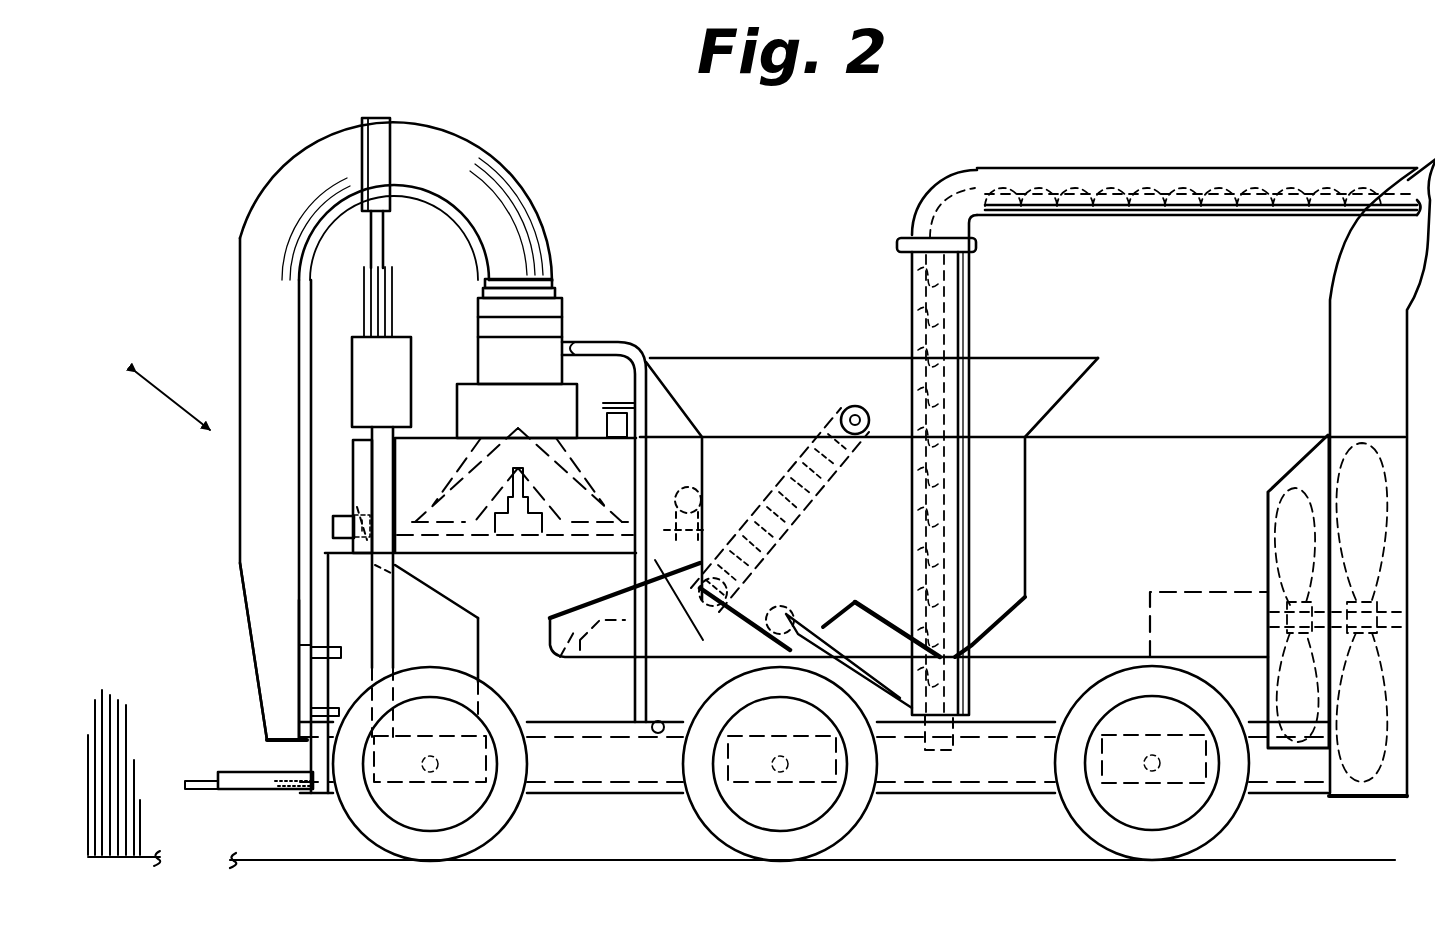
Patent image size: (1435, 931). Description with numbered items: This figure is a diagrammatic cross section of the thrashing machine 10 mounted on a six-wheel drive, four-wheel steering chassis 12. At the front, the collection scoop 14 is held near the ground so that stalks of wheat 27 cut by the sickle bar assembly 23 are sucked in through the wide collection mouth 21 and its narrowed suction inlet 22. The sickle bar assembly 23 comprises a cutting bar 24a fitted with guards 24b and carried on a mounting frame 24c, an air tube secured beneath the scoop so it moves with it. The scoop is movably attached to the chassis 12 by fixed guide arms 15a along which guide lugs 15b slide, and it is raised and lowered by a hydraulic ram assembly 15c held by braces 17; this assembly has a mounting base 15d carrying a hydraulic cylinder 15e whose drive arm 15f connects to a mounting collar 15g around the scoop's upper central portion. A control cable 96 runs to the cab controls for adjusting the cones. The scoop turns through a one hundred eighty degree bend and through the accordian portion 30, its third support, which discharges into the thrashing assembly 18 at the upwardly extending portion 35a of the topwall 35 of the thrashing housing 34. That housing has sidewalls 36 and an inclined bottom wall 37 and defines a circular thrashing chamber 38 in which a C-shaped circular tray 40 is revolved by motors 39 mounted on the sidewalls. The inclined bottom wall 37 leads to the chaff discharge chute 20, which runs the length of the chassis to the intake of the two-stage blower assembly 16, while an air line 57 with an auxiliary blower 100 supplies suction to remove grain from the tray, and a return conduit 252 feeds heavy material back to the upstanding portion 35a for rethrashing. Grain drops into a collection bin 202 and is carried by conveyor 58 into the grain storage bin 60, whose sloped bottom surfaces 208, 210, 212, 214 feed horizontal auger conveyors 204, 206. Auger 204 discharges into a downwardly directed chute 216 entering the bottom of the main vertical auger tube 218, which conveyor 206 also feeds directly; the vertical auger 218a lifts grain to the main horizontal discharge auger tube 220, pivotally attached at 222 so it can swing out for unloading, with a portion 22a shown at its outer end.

The thrashing machine 10 is at (714, 260).
The chassis 12 is at (812, 767).
The collection scoop 14 is at (215, 522).
The guide arms 15a is at (327, 647).
The guide lugs 15b is at (312, 643).
The hydraulic ram assembly 15c is at (338, 373).
The mounting base 15d is at (381, 382).
The hydraulic cylinder 15e is at (392, 297).
The drive arm 15f is at (383, 236).
The mounting collar 15g is at (378, 162).
The two-stage blower assembly 16 is at (1245, 497).
The braces 17 is at (398, 487).
The thrashing assembly 18 is at (466, 353).
The chaff discharge chute 20 is at (477, 639).
The collection mouth 21 is at (250, 736).
The suction inlet 22 is at (281, 745).
The duct end cap 22a is at (1273, 216).
The sickle bar assembly 23 is at (282, 792).
The cutting bar 24a is at (253, 781).
The guards 24b is at (208, 791).
The mounting frame 24c is at (308, 721).
The stalks of wheat 27 is at (102, 706).
The accordian portion 30 is at (556, 302).
The thrashing housing 34 is at (668, 428).
The topwall 35 is at (477, 365).
The upwardly extending portion 35a is at (597, 382).
The sidewalls 36 is at (356, 458).
The inclined bottom wall 37 is at (450, 605).
The thrashing chamber 38 is at (356, 487).
The motors 39 is at (333, 520).
The circular tray 40 is at (700, 493).
The air line 57 is at (619, 592).
The conveyor 58 is at (815, 497).
The grain storage bin 60 is at (1092, 389).
The control cable 96 is at (331, 539).
The auxiliary blower 100 is at (563, 660).
The collection bin 202 is at (806, 648).
The conveyor 204 is at (806, 608).
The conveyor 206 is at (976, 623).
The bottom surface 208 is at (747, 595).
The bottom surface 210 is at (845, 604).
The bottom surface 212 is at (859, 606).
The bottom surface 214 is at (1027, 604).
The downwardly directed chute 216 is at (893, 706).
The main vertical auger tube 218 is at (970, 313).
The vertical auger 218a is at (972, 333).
The main horizontal discharge auger tube 220 is at (1190, 216).
The pivotal attachment 222 is at (899, 238).
The return conduit 252 is at (647, 700).